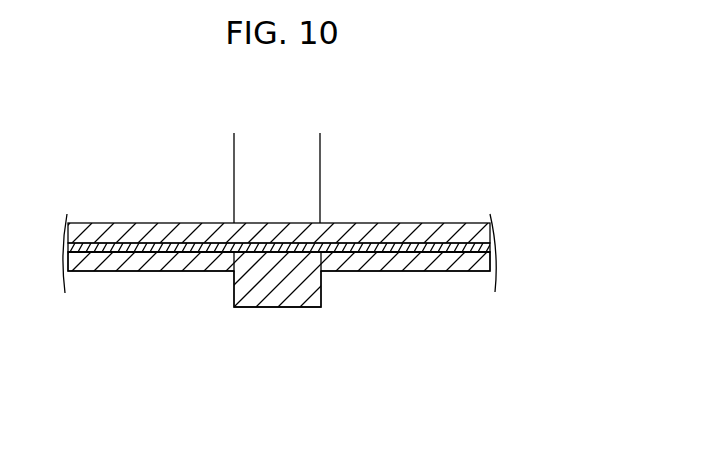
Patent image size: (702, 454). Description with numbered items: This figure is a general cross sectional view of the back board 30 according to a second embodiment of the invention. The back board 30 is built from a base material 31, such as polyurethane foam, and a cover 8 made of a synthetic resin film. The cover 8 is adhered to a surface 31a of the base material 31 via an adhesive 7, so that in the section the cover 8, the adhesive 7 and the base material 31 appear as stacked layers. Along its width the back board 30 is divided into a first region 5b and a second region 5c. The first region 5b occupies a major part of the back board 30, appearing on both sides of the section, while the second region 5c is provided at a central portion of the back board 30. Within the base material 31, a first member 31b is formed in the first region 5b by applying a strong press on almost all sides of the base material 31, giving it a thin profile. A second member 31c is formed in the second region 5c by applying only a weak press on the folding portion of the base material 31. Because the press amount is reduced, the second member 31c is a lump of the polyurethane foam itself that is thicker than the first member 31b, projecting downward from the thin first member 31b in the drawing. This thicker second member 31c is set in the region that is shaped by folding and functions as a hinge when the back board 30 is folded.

The first region 5b is at (234, 145).
The second region 5c is at (234, 145).
The adhesive 7 is at (490, 247).
The cover 8 is at (490, 226).
The back board 30 is at (407, 212).
The base material 31 is at (486, 262).
The surface of the base material 31a is at (213, 250).
The first member 31b is at (182, 262).
The second member 31c is at (282, 297).